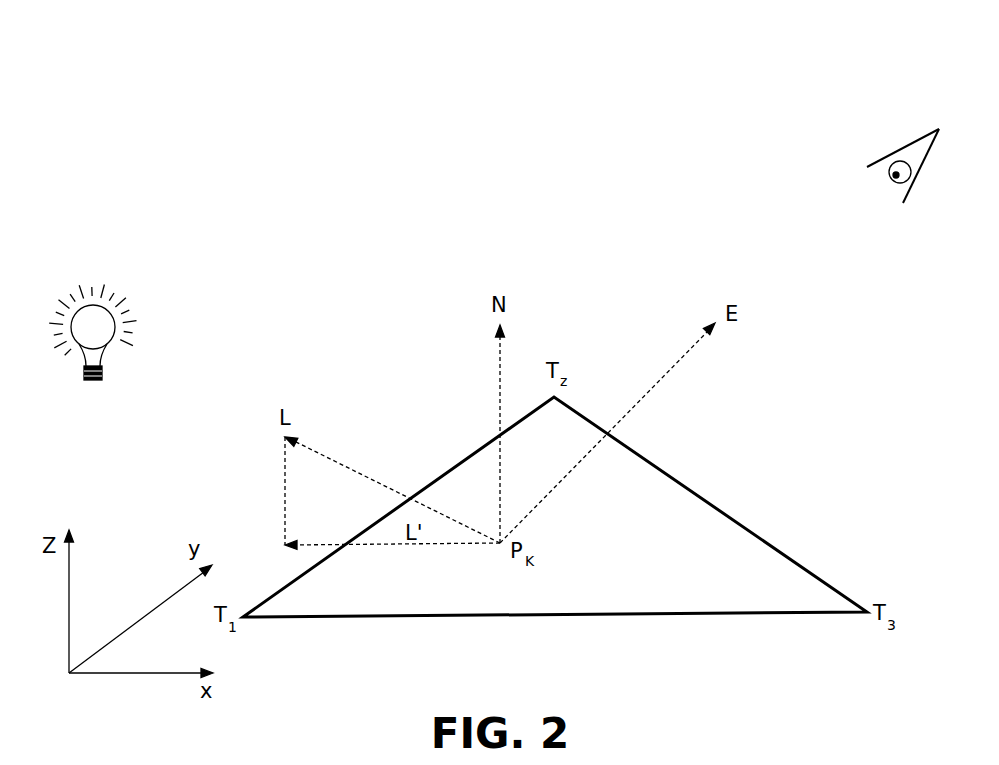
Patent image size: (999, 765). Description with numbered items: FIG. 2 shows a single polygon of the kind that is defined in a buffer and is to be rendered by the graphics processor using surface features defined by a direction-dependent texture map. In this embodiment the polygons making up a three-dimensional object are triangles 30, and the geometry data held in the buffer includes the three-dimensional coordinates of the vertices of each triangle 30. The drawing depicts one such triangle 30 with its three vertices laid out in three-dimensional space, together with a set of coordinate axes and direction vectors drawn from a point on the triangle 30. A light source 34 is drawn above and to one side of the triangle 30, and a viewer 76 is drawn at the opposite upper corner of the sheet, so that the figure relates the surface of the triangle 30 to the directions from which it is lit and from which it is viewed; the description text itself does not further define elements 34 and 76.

The triangle 30 is at (778, 597).
The light source 34 is at (116, 292).
The viewer / eye point 76 is at (904, 112).